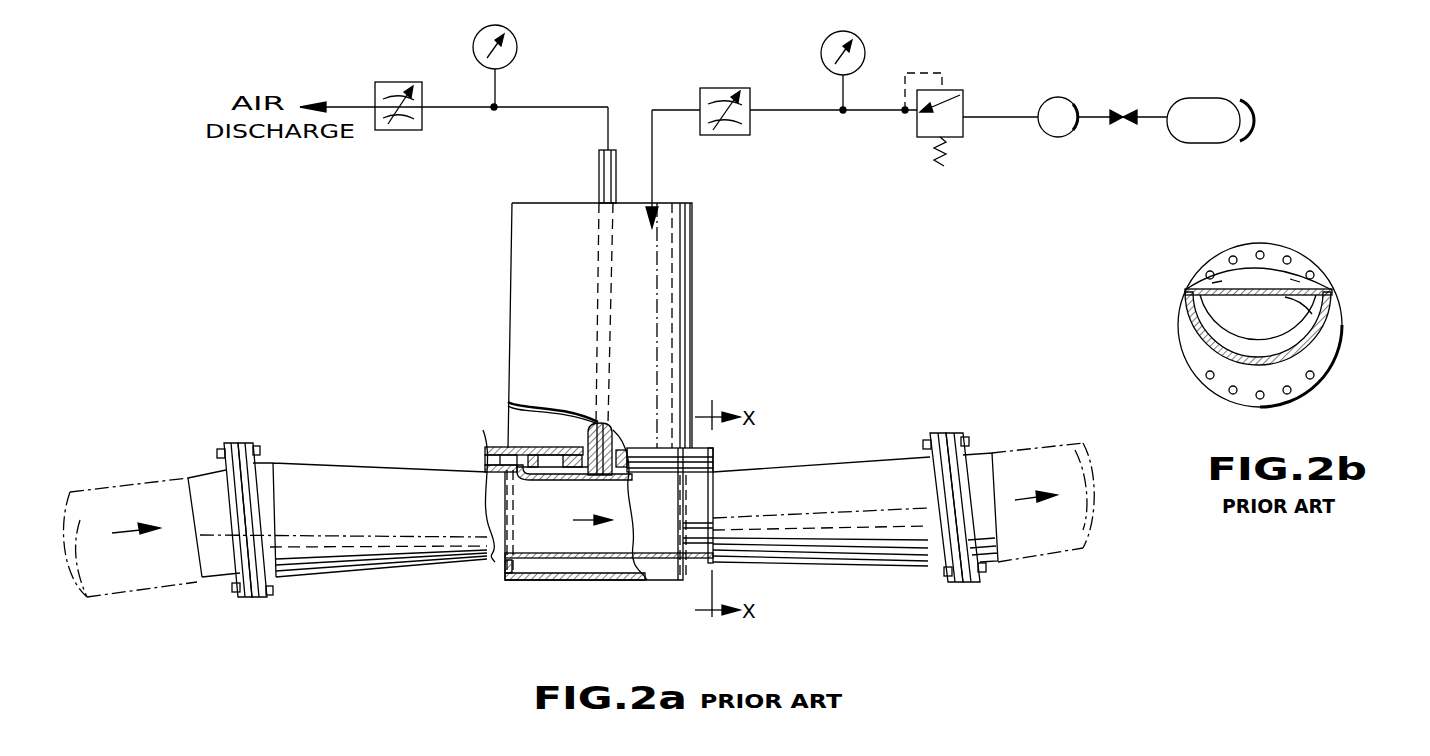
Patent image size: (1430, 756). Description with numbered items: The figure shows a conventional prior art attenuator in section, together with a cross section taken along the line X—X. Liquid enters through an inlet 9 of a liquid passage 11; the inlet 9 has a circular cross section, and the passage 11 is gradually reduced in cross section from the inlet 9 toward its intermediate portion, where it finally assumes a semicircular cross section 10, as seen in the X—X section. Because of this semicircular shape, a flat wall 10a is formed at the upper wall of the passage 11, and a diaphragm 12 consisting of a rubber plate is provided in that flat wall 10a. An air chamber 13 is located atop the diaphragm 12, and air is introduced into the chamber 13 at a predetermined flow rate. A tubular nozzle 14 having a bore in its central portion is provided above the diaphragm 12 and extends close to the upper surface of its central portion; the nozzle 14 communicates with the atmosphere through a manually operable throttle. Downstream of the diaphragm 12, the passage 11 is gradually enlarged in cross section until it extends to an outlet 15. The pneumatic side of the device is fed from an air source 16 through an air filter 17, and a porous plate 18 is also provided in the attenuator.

In FIG. 2A, the inlet 9 is at (203, 485).
In FIG. 2B, the semicircular cross section 10 is at (1277, 393).
In FIG. 2B, the flat wall 10a is at (1333, 297).
In FIG. 2A, the liquid passage 11 is at (570, 548).
In FIG. 2B, the liquid passage 11 is at (1293, 340).
In FIG. 2A, the diaphragm 12 is at (552, 472).
In FIG. 2A, the air chamber 13 is at (533, 417).
In FIG. 2A, the tubular nozzle 14 is at (611, 428).
In FIG. 2A, the outlet 15 is at (968, 468).
In FIG. 2A, the air source 16 is at (655, 203).
In FIG. 2A, the air filter 17 is at (1060, 97).
In FIG. 2A, the porous plate 18 is at (518, 432).